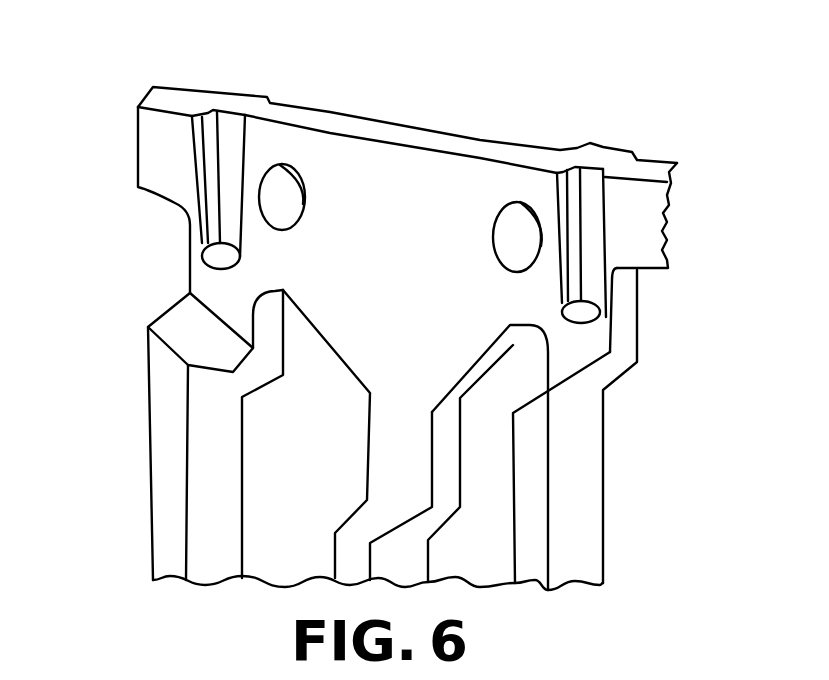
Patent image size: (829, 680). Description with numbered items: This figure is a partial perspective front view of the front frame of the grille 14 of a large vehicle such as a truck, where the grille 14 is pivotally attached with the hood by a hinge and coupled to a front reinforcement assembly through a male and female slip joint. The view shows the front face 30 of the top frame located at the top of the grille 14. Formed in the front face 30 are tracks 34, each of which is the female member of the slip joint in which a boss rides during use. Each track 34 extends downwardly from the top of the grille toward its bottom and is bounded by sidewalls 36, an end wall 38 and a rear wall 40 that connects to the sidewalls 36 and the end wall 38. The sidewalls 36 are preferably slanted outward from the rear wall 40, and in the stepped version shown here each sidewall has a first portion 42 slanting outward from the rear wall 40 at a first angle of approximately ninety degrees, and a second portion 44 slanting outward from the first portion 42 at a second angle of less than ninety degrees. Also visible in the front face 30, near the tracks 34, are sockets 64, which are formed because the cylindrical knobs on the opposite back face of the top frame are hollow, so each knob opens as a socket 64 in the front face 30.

The grille 14 is at (163, 390).
The front face 30 is at (387, 183).
The track 34 is at (593, 217).
The sidewalls 36 is at (577, 281).
The end wall 38 is at (580, 313).
The rear wall 40 is at (229, 116).
The first portion 42 is at (215, 128).
The second portion 44 is at (200, 193).
The socket 64 is at (512, 223).